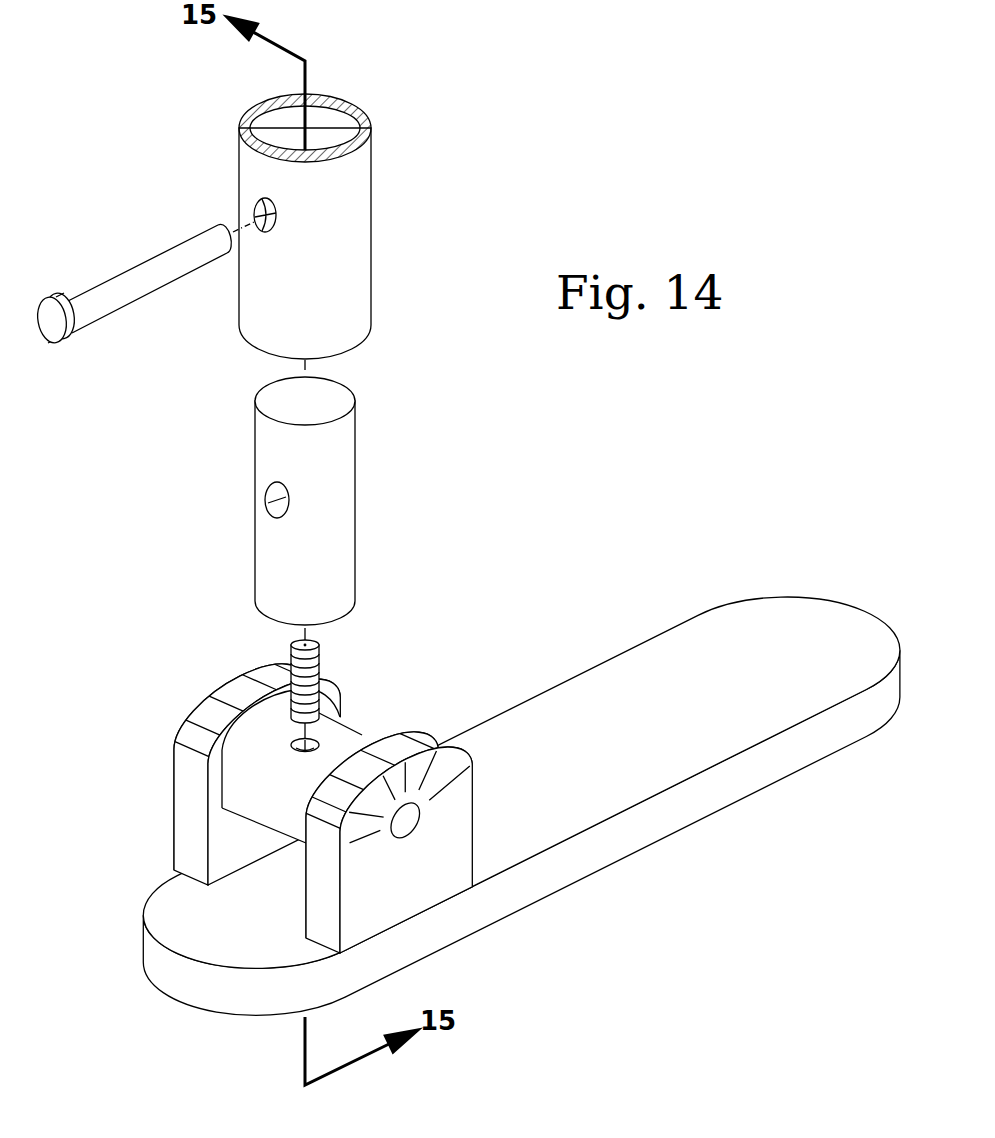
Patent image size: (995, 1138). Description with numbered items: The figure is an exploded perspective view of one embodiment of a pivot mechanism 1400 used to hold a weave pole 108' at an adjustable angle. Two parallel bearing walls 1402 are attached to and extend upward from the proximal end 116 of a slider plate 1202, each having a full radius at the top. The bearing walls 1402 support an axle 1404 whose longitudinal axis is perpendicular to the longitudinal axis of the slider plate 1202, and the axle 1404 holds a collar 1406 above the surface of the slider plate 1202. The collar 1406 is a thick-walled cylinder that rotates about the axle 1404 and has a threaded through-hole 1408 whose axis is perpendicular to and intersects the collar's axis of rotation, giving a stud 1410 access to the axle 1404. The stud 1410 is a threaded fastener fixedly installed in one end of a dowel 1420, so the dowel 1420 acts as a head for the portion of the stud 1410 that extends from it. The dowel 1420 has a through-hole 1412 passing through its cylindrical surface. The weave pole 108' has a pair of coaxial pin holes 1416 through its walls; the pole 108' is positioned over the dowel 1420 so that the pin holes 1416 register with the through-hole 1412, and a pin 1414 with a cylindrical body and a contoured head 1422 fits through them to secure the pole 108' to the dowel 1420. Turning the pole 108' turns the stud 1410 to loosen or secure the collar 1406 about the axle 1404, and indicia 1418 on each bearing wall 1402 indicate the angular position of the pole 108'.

The weave pole 108' is at (356, 226).
The pin holes 1416 is at (272, 228).
The head 1422 is at (53, 298).
The pin 1414 is at (142, 297).
The dowel 1420 is at (356, 462).
The through-hole 1412 is at (282, 518).
The stud 1410 is at (320, 664).
The threaded through-hole 1408 is at (322, 744).
The indicia 1418 is at (208, 720).
The axle 1404 is at (397, 829).
The collar 1406 is at (252, 822).
The bearing walls 1402 is at (321, 798).
The pivot mechanism 1400 is at (618, 482).
The slider plate 1202 is at (623, 641).
The proximal end 116 is at (153, 988).